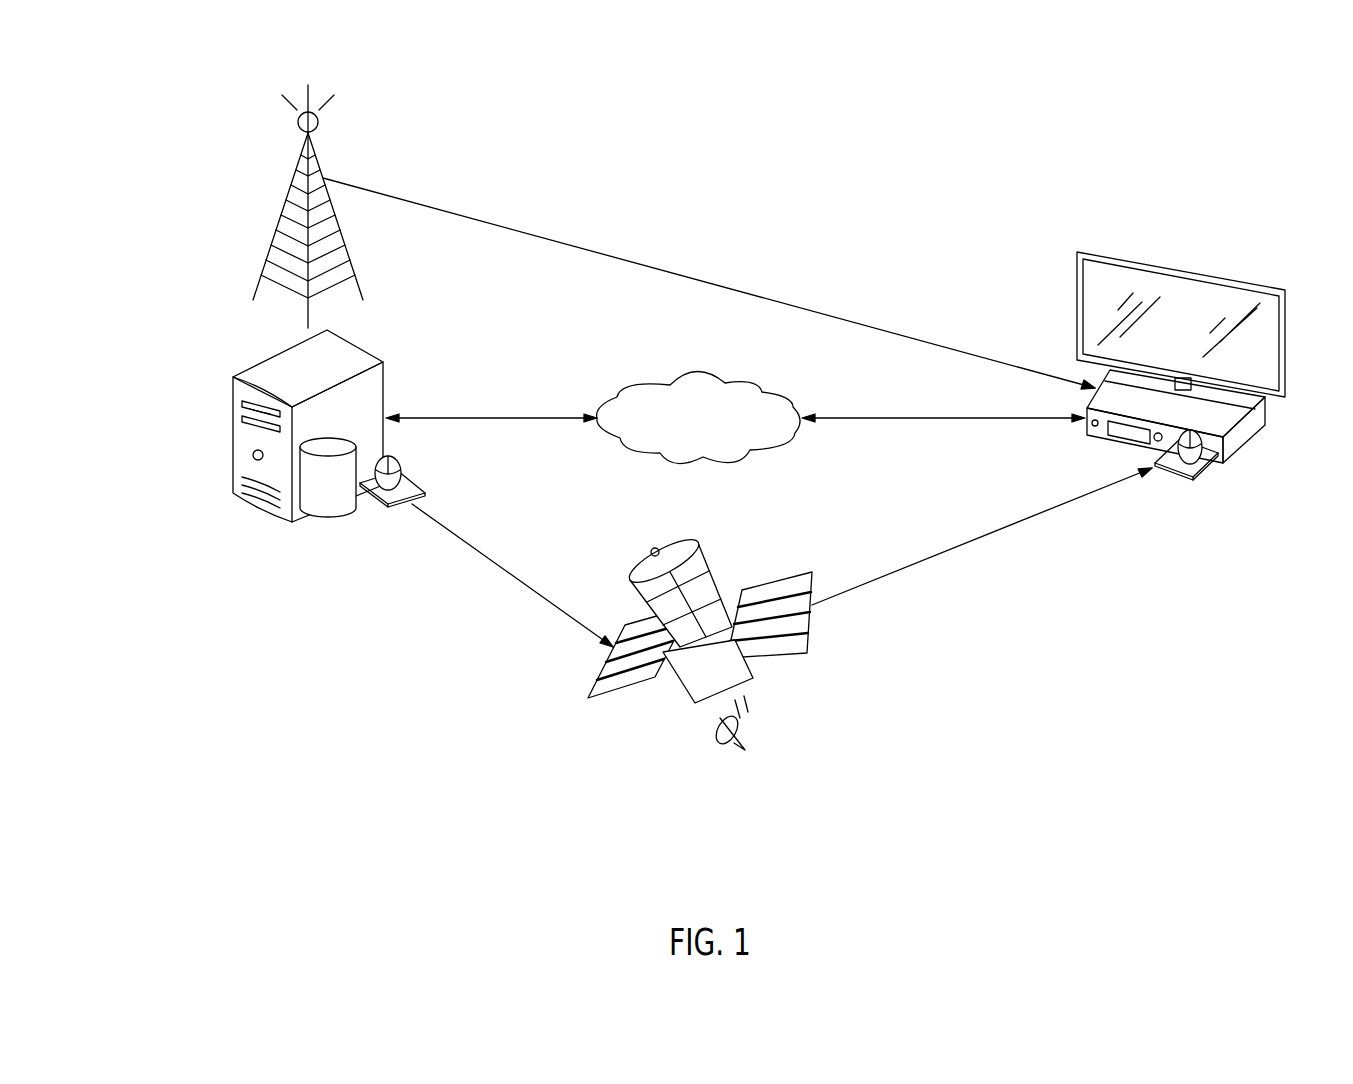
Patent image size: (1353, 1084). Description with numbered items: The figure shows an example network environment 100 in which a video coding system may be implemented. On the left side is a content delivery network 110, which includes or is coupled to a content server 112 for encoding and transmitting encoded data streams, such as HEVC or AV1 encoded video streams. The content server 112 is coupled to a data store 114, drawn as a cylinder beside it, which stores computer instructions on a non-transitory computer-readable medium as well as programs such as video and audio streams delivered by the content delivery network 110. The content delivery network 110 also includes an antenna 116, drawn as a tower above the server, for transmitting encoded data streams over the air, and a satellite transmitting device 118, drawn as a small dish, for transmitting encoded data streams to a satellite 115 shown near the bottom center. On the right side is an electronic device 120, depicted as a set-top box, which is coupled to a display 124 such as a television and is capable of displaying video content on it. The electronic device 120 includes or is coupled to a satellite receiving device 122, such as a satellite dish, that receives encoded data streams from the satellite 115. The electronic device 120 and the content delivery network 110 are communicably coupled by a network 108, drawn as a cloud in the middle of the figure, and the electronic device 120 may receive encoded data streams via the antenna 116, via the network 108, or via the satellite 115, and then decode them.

The network environment 100 is at (1213, 84).
The network 108 is at (735, 457).
The content delivery network 110 is at (152, 555).
The content server 112 is at (233, 420).
The data store 114 is at (330, 512).
The satellite 115 is at (757, 675).
The antenna 116 is at (279, 222).
The satellite transmitting device 118 is at (403, 475).
The electronic device 120 is at (1245, 430).
The satellite receiving device 122 is at (1175, 472).
The display 124 is at (1205, 275).